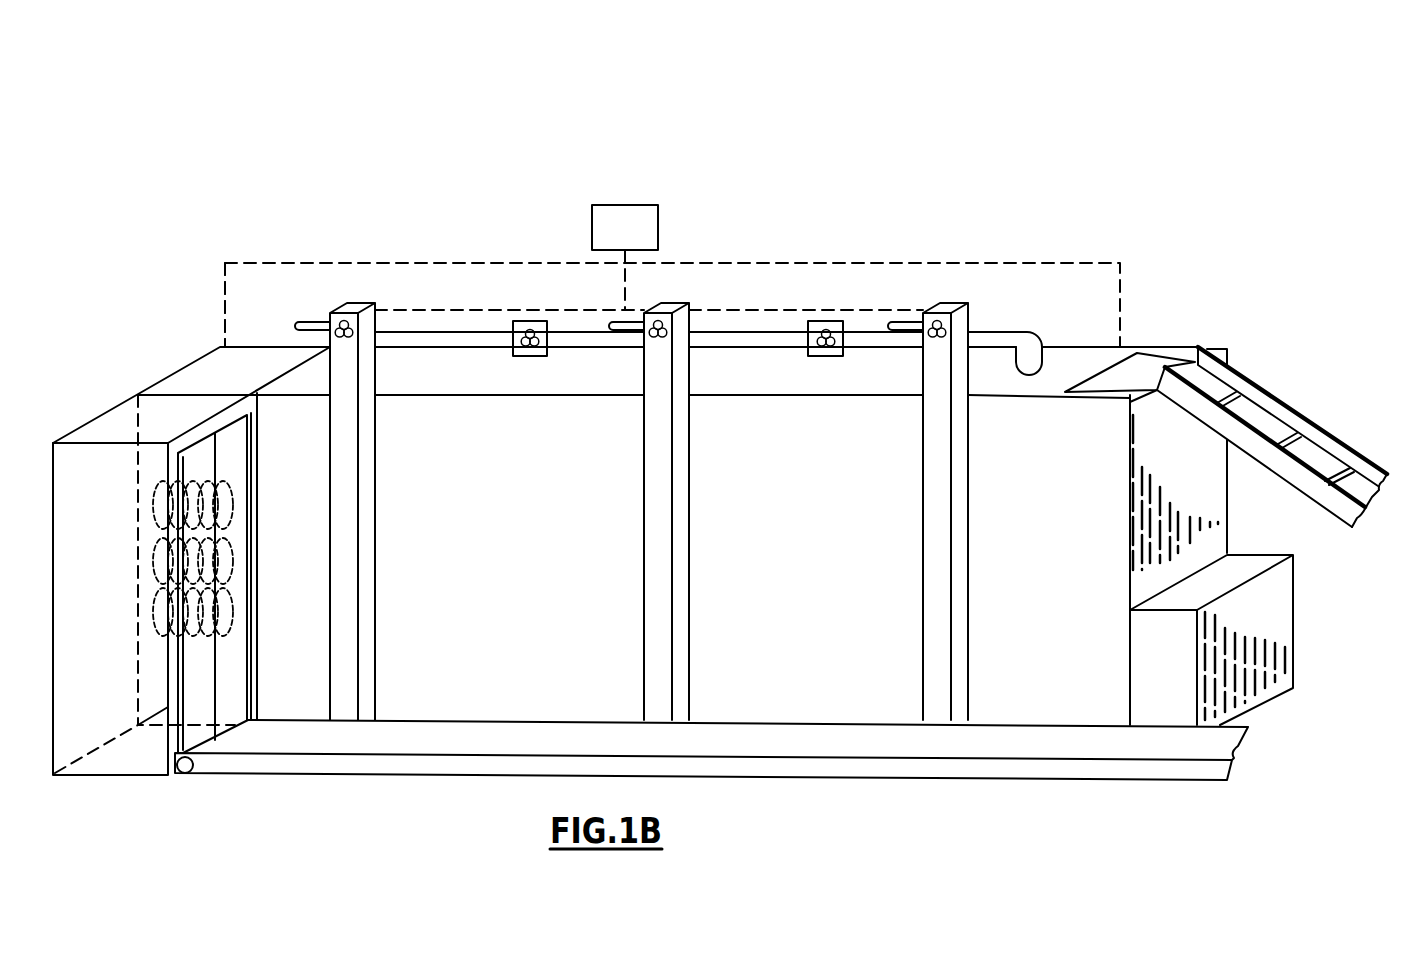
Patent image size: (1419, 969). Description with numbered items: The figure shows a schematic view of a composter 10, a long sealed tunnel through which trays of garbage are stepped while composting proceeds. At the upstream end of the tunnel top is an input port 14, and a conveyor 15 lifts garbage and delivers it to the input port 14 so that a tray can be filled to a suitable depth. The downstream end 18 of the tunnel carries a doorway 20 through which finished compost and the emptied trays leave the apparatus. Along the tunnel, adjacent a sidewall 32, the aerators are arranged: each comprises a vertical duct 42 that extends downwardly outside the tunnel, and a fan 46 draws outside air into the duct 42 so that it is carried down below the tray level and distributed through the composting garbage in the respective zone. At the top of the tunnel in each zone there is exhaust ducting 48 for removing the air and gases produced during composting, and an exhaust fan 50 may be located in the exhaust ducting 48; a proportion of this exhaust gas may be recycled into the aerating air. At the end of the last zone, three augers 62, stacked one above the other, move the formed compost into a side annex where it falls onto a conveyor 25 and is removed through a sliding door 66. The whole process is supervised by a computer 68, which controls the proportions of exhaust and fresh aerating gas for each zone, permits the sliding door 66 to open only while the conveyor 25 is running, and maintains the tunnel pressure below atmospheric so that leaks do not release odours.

The composter 10 is at (772, 116).
The input port 14 is at (1155, 357).
The conveyor 15 is at (1280, 412).
The downstream end 18 is at (245, 328).
The doorway 20 is at (282, 424).
The conveyor 25 is at (975, 742).
The sidewall 32 is at (473, 425).
The vertical duct 42 is at (372, 306).
The fan 46 is at (350, 305).
The exhaust ducting 48 is at (522, 318).
The exhaust fan 50 is at (545, 320).
The auger 62 is at (207, 470).
The sliding door 66 is at (137, 727).
The computer 68 is at (623, 207).